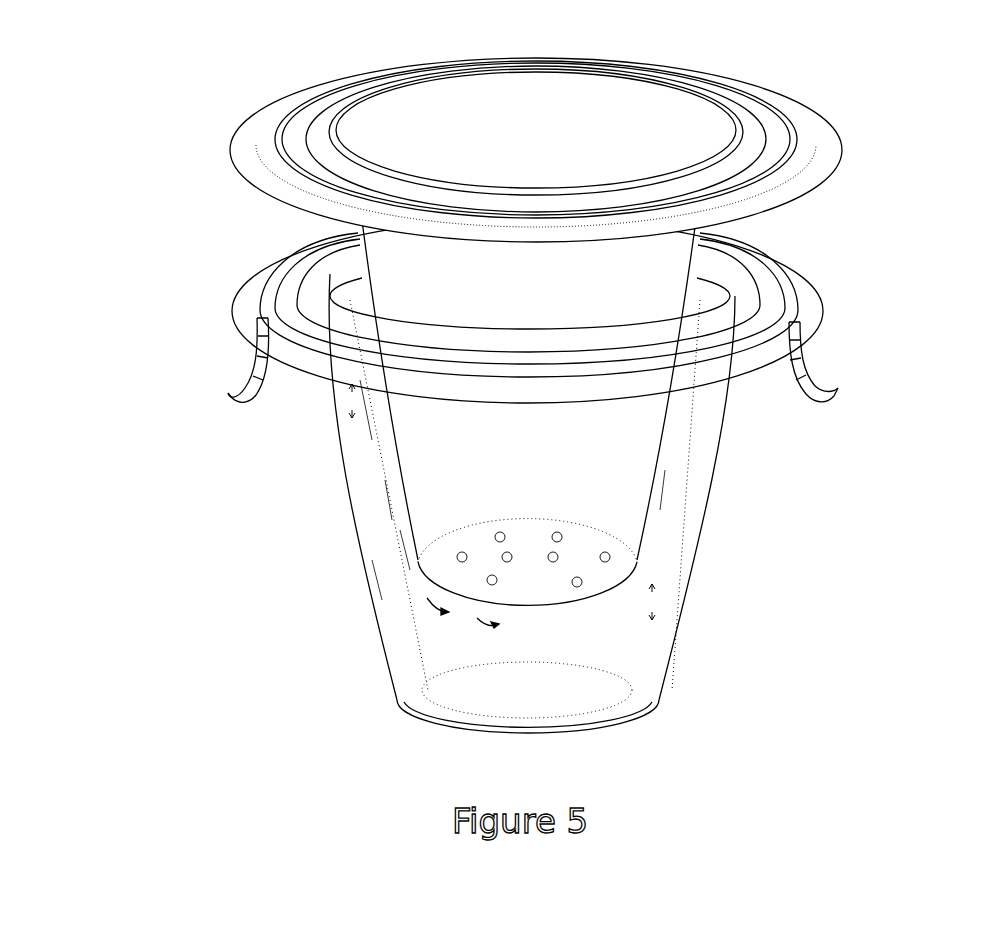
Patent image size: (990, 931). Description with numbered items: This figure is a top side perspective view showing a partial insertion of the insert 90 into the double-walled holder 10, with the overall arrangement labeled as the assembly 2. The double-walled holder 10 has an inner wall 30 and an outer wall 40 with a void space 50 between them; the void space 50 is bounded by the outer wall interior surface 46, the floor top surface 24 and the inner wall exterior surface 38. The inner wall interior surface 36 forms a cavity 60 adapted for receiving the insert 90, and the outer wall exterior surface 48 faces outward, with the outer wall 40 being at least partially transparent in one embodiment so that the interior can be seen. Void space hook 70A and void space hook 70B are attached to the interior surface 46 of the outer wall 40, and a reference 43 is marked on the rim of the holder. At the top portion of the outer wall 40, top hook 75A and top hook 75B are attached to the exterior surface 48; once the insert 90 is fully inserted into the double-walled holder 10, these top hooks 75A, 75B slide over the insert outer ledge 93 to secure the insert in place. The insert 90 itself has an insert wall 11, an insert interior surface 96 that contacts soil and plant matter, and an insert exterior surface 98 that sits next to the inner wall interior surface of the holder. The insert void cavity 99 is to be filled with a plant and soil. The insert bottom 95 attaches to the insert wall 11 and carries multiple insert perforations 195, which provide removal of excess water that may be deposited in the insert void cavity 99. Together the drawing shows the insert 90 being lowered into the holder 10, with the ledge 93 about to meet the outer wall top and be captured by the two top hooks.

The beverage cartridge assembly 2 is at (231, 312).
The double-walled holder 10 is at (443, 628).
The insert wall 11 is at (229, 146).
The floor top surface 24 is at (635, 683).
The inner wall 30 is at (388, 518).
The inner wall interior surface 36 is at (403, 548).
The inner wall exterior surface 38 is at (628, 637).
The outer wall 40 is at (365, 490).
The rim flange 43 is at (266, 262).
The outer wall interior surface 46 is at (377, 579).
The outer wall exterior surface 48 is at (340, 462).
The void space 50 is at (499, 502).
The cavity 60 is at (463, 613).
The void space hook 70A is at (754, 279).
The void space hook 70B is at (311, 280).
The top hook 75A is at (845, 377).
The top hook 75B is at (226, 380).
The insert 90 is at (391, 433).
The insert outer ledge 93 is at (845, 155).
The insert bottom 95 is at (590, 539).
The insert interior surface 96 is at (650, 465).
The insert exterior surface 98 is at (655, 497).
The insert void cavity 99 is at (505, 152).
The insert perforations 195 is at (582, 583).